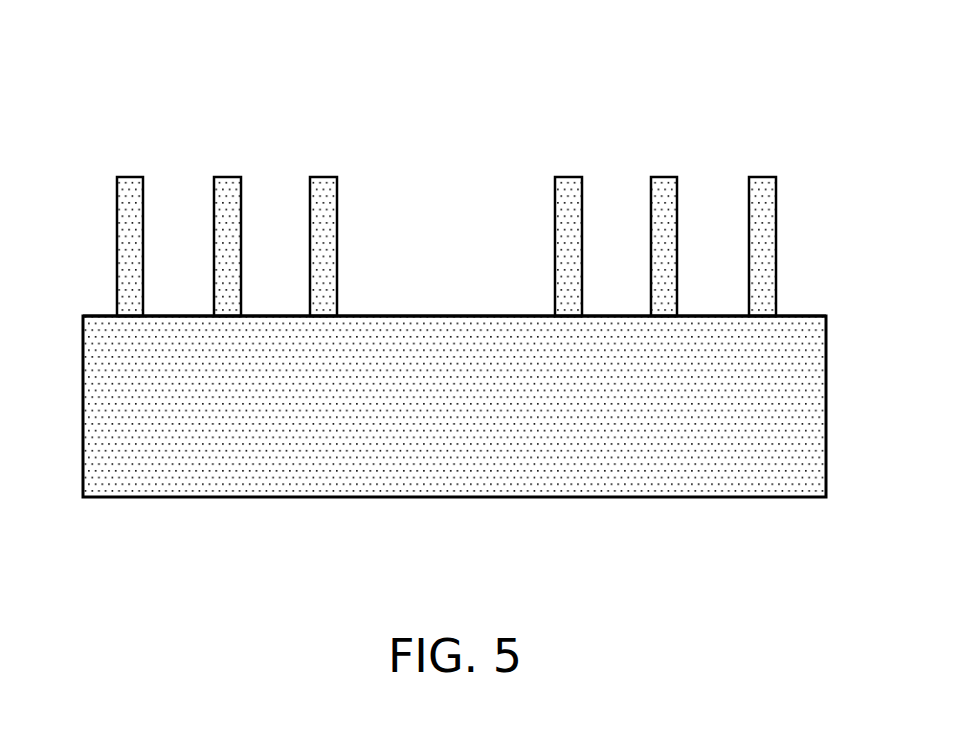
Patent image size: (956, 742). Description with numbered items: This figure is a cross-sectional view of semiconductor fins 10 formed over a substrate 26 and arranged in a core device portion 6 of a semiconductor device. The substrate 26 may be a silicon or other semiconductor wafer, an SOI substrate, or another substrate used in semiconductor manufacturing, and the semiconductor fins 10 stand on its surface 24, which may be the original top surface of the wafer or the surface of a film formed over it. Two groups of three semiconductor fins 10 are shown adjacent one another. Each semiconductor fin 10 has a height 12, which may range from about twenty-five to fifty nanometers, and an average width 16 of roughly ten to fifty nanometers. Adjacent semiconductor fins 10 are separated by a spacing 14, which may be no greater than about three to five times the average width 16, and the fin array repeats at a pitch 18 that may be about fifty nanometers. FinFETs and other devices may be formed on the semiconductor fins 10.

The core device portion 6 is at (237, 45).
The semiconductor fin 10 is at (125, 247).
The height 12 is at (339, 177).
The spacing 14 is at (253, 220).
The average width 16 is at (337, 176).
The pitch 18 is at (129, 176).
The surface 24 is at (452, 315).
The substrate 26 is at (437, 419).